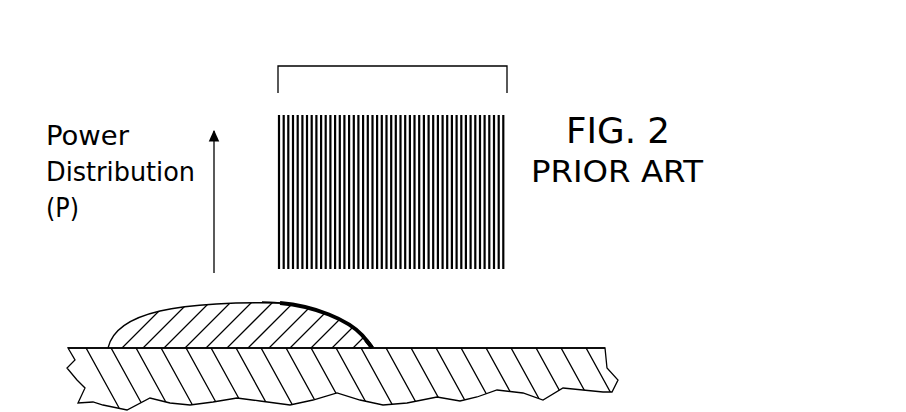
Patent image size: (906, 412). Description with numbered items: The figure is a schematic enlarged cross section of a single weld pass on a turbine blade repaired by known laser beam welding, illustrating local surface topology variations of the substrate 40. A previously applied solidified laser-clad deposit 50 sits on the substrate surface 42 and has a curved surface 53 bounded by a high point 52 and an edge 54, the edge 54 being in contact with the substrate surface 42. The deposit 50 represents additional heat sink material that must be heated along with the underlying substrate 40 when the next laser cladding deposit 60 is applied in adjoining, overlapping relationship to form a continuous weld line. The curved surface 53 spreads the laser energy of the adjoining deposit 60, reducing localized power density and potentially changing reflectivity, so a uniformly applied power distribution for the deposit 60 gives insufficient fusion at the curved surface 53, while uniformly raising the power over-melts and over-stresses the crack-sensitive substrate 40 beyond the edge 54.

The substrate 40 is at (636, 366).
The substrate surface 42 is at (503, 348).
The solidified laser-clad deposit 50 is at (170, 330).
The high point 52 is at (280, 303).
The curved surface 53 is at (334, 310).
The edge 54 is at (376, 341).
The laser cladding deposit 60 is at (466, 56).